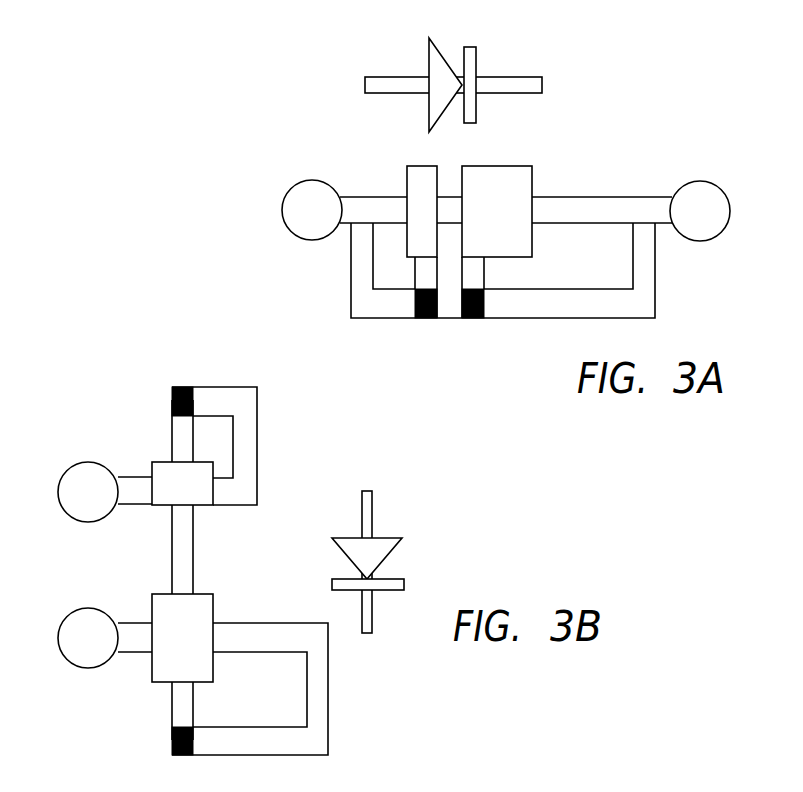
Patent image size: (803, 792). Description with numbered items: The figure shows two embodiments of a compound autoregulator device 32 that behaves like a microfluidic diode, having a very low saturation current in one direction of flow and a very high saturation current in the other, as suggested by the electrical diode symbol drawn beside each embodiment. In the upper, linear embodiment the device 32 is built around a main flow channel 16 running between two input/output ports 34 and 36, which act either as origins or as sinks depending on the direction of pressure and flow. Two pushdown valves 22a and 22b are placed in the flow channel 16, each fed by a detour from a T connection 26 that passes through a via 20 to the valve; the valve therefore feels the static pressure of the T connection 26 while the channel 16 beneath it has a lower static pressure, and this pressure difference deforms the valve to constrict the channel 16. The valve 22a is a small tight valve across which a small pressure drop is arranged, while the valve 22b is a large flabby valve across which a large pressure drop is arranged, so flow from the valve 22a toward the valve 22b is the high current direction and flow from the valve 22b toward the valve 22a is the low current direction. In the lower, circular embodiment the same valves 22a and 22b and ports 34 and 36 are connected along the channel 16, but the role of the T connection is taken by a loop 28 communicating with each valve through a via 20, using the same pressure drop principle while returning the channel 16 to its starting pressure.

In FIG. 3A, the flow channel 16 is at (562, 205).
In FIG. 3B, the flow channel 16 is at (175, 553).
In FIG. 3A, the via 20 is at (437, 313).
In FIG. 3B, the via 20 is at (190, 387).
In FIG. 3A, the pushdown valve 22a is at (407, 167).
In FIG. 3B, the pushdown valve 22a is at (200, 495).
In FIG. 3A, the pushdown valve 22b is at (498, 172).
In FIG. 3B, the pushdown valve 22b is at (208, 613).
In FIG. 3A, the T connection 26 is at (362, 208).
In FIG. 3B, the loop 28 is at (258, 442).
In FIG. 3A, the linear device 32 is at (650, 82).
In FIG. 3B, the linear device 32 is at (322, 474).
In FIG. 3A, the input/output port 34 is at (280, 208).
In FIG. 3B, the input/output port 34 is at (67, 470).
In FIG. 3A, the input/output port 36 is at (731, 210).
In FIG. 3B, the input/output port 36 is at (57, 638).